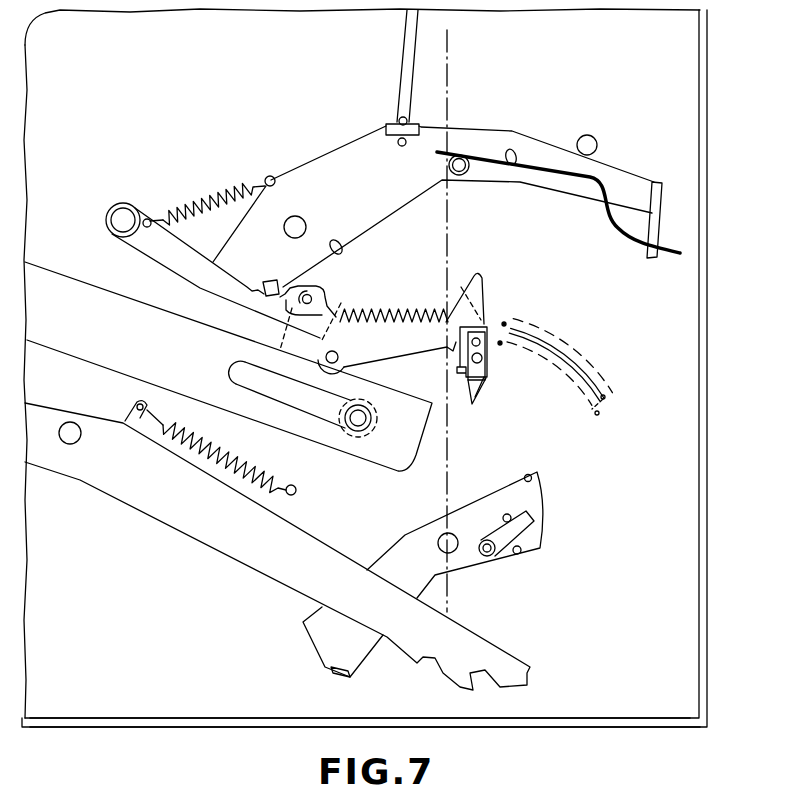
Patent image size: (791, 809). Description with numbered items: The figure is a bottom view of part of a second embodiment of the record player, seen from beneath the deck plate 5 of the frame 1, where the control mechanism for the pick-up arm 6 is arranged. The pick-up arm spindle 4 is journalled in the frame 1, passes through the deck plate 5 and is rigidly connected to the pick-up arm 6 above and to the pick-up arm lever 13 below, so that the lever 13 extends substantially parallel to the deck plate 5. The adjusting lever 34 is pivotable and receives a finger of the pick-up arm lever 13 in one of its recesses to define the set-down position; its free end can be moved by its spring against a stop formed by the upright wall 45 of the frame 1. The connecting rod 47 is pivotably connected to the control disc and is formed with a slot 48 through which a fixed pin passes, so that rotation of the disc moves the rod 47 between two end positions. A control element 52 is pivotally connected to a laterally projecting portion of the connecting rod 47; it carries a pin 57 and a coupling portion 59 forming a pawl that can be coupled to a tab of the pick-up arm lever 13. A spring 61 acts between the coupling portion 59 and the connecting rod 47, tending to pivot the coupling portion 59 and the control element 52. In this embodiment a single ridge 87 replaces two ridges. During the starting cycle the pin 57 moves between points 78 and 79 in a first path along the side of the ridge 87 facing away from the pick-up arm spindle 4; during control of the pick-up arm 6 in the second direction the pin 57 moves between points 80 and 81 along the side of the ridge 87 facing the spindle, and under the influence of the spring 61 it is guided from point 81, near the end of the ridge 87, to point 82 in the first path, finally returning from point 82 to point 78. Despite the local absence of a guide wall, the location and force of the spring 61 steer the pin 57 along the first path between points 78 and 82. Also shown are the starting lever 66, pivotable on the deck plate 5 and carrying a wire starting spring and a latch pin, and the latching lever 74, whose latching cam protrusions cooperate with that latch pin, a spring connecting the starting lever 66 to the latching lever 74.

The frame 1 is at (115, 733).
The pick-up arm spindle 4 is at (446, 541).
The deck plate 5 is at (217, 690).
The pick-up arm 6 is at (451, 100).
The pick-up arm lever 13 is at (410, 553).
The adjusting lever 34 is at (212, 520).
The upright wall 45 is at (599, 722).
The connecting rod 47 is at (110, 347).
The slot 48 is at (313, 403).
The control element 52 is at (425, 319).
The pin 57 is at (461, 288).
The coupling portion 59 is at (477, 387).
The spring 61 is at (369, 305).
The starting lever 66 is at (346, 164).
The latching lever 74 is at (168, 250).
The point 78 is at (484, 321).
The point 79 is at (605, 397).
The point 80 is at (597, 415).
The point 81 is at (501, 345).
The point 82 is at (506, 323).
The ridge 87 is at (566, 361).